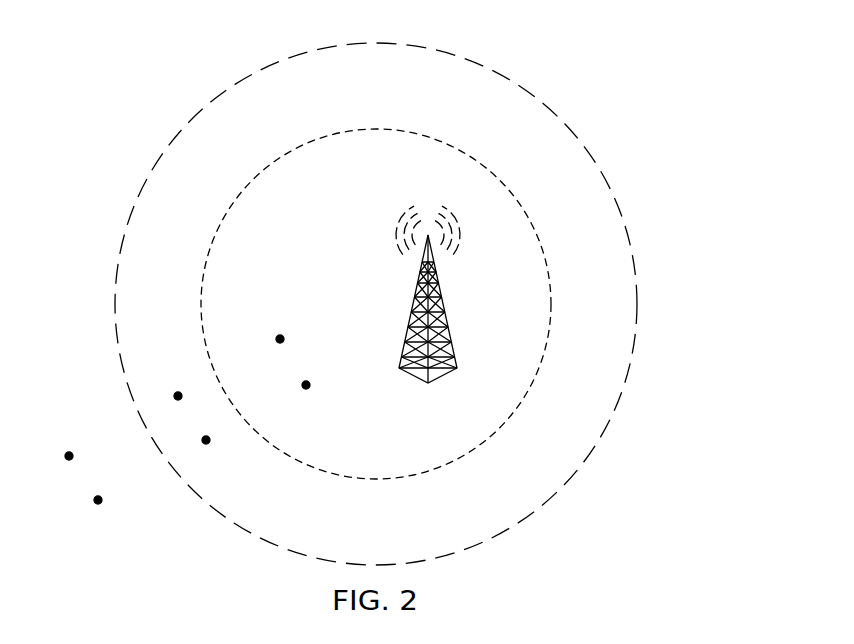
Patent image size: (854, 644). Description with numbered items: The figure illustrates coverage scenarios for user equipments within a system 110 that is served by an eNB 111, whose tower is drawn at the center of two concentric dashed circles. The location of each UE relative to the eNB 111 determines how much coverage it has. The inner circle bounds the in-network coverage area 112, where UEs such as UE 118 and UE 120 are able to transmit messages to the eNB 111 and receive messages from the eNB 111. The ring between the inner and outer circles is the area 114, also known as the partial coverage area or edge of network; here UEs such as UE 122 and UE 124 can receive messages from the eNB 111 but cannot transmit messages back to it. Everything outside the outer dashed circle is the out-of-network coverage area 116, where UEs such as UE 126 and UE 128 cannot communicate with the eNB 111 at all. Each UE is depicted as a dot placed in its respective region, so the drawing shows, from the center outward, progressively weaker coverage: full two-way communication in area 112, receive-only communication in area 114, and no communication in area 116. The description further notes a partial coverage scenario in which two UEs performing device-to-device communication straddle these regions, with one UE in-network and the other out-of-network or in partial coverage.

The system 110 is at (181, 54).
The eNB 111 is at (413, 307).
The in-network coverage area 112 is at (502, 174).
The partial coverage area 114 is at (506, 70).
The out-of-network coverage area 116 is at (679, 180).
The UE 118 is at (280, 335).
The UE 120 is at (310, 386).
The UE 122 is at (178, 392).
The UE 124 is at (210, 441).
The UE 126 is at (69, 452).
The UE 128 is at (102, 501).